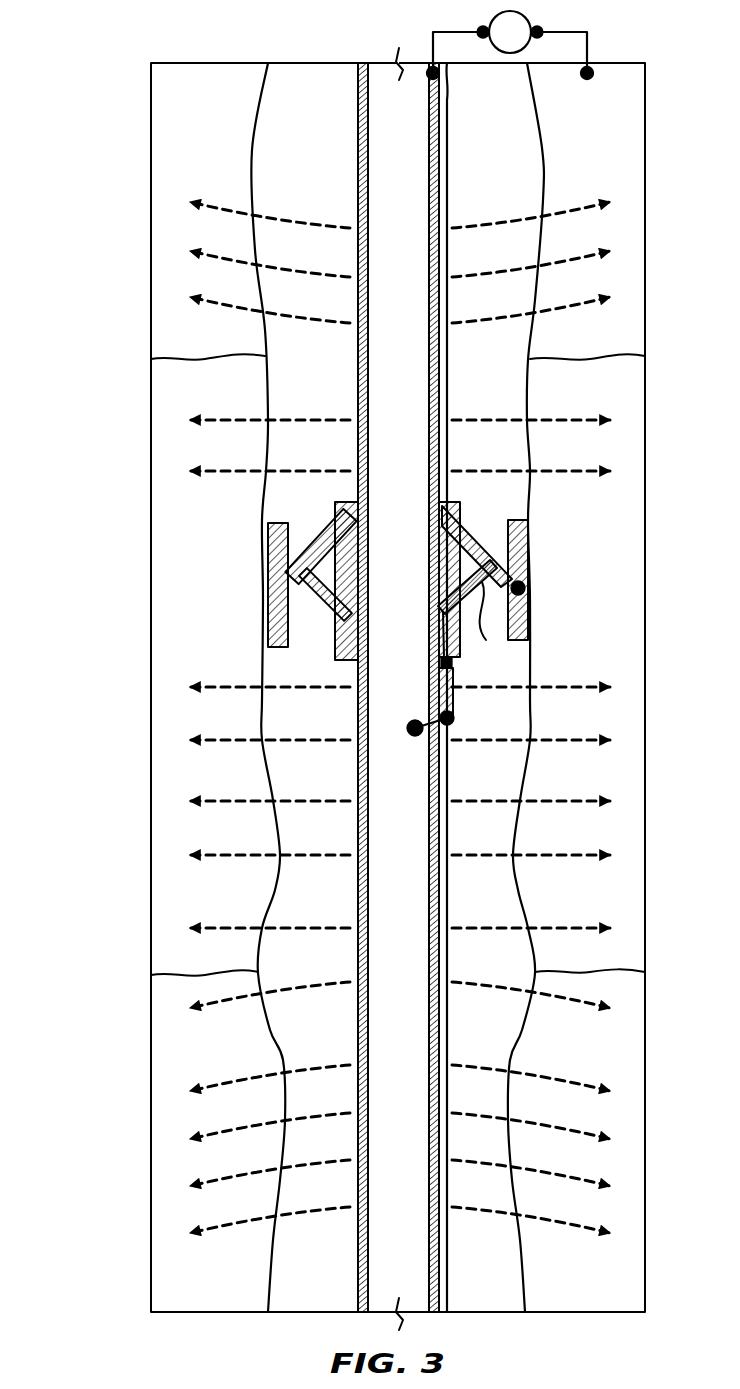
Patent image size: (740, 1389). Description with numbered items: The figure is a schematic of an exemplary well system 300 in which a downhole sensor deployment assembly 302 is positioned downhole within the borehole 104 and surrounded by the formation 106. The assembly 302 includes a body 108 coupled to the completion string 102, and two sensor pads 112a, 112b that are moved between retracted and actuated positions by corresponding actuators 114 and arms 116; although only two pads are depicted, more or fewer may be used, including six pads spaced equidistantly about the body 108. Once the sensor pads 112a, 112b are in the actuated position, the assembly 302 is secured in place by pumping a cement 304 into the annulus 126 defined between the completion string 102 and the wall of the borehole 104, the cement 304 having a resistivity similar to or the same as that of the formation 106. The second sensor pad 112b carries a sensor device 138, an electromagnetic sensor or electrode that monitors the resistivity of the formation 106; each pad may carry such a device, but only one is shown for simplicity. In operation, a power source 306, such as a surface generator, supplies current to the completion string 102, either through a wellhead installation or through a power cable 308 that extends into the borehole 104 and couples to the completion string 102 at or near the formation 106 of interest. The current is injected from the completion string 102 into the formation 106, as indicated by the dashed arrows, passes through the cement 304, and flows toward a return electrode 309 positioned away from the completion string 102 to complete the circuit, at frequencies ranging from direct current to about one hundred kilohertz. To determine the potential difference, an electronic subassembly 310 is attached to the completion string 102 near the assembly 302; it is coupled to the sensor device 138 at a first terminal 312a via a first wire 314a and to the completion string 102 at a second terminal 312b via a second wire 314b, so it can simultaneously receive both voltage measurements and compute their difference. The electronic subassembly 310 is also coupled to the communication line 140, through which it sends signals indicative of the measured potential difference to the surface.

The well system 300 is at (106, 138).
The downhole sensor deployment assembly 302 is at (233, 588).
The cement 304 is at (521, 388).
The power source 306 is at (540, 31).
The power cable 308 is at (432, 32).
The return electrode 309 is at (592, 76).
The electronic subassembly 310 is at (453, 692).
The first terminal 312a is at (452, 663).
The second terminal 312b is at (453, 722).
The first wire 314a is at (493, 625).
The second wire 314b is at (414, 721).
The completion string 102 is at (369, 246).
The borehole 104 is at (534, 148).
The formation 106 is at (624, 517).
The body 108 is at (357, 545).
The first sensor pad 112a is at (265, 568).
The second sensor pad 112b is at (531, 559).
The actuator 114 is at (447, 577).
The arm 116 is at (300, 557).
The annulus 126 is at (331, 388).
The sensor device 138 is at (525, 588).
The communication line 140 is at (440, 206).